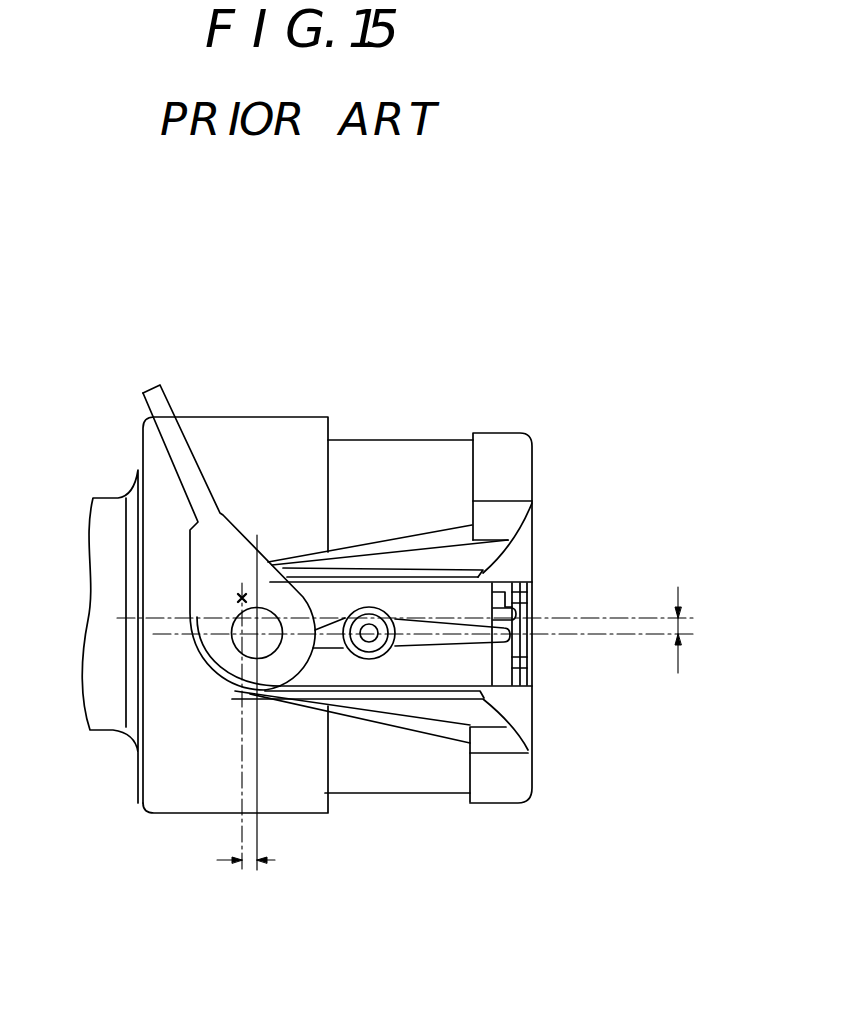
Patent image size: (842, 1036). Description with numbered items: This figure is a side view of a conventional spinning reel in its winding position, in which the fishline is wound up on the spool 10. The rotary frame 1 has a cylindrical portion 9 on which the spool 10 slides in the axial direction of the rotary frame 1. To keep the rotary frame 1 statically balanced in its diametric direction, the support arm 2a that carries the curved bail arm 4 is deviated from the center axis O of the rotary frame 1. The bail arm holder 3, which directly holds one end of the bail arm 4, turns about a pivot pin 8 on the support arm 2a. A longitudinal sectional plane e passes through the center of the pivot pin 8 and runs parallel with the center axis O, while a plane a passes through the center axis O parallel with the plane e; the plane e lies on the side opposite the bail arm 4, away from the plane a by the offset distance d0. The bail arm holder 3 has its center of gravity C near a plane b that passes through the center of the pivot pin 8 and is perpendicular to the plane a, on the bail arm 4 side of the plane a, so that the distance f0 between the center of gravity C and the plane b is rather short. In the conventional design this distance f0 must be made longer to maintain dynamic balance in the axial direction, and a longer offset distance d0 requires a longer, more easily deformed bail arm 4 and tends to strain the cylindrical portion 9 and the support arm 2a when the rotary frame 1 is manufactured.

The rotary frame 1 is at (505, 432).
The support arm 2a is at (403, 733).
The bail arm holder 3 is at (207, 590).
The bail arm 4 is at (181, 437).
The pivot pin 8 is at (273, 649).
The cylindrical portion 9 is at (397, 440).
The spool 10 is at (113, 732).
The center of gravity C is at (240, 590).
The center axis O is at (174, 633).
The plane a is at (614, 617).
The longitudinal sectional plane e is at (613, 648).
The offset distance d0 is at (703, 630).
The distance f0 is at (246, 883).
The plane b is at (259, 822).